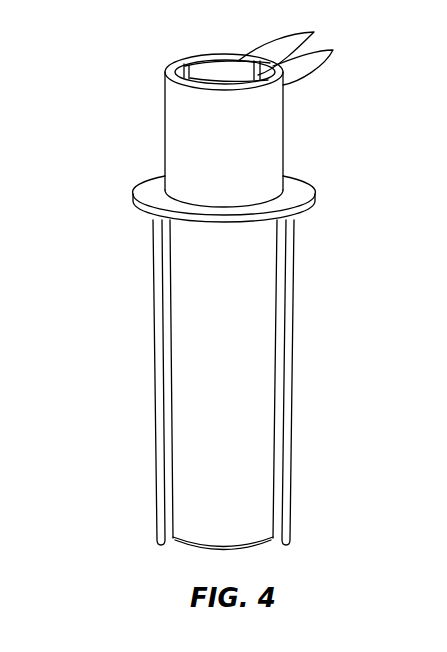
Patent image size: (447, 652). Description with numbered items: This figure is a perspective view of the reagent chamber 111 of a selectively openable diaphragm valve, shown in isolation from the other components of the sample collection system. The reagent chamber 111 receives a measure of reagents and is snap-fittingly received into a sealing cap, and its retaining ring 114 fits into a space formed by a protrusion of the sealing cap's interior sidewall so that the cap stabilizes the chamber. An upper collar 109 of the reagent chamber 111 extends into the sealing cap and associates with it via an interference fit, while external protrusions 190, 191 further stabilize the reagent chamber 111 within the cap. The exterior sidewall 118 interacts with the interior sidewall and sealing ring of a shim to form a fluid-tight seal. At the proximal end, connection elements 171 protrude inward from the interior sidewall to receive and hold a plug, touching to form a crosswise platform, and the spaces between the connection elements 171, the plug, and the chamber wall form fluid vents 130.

The reagent chamber 111 is at (97, 44).
The fluid vents 130 is at (229, 54).
The connection elements 171 is at (315, 34).
The exterior sidewall 118 is at (283, 120).
The retaining ring 114 is at (313, 195).
The upper collar 109 is at (263, 362).
The left leg 190 is at (157, 482).
The external protrusions 191 is at (291, 484).